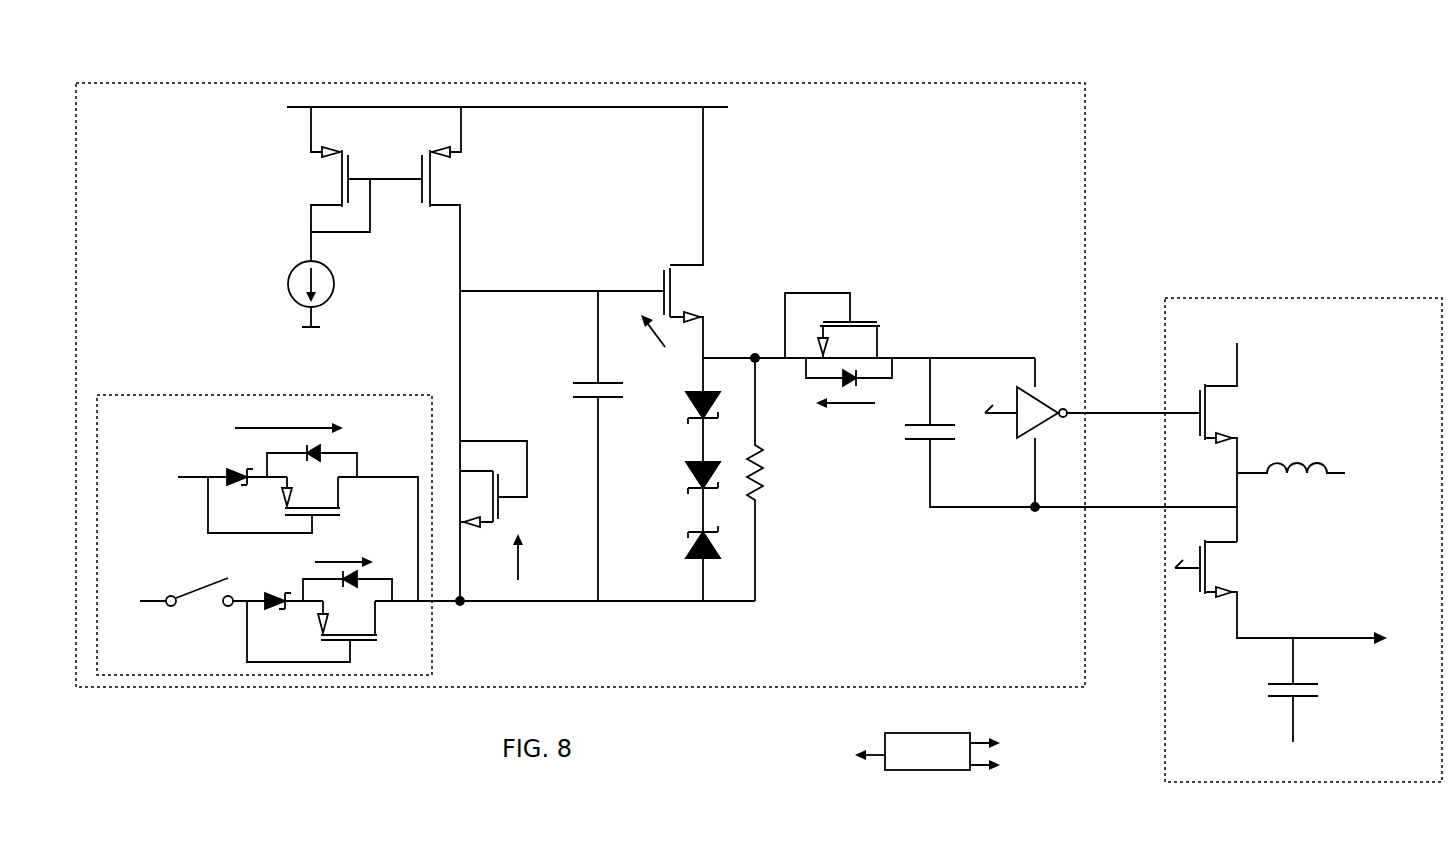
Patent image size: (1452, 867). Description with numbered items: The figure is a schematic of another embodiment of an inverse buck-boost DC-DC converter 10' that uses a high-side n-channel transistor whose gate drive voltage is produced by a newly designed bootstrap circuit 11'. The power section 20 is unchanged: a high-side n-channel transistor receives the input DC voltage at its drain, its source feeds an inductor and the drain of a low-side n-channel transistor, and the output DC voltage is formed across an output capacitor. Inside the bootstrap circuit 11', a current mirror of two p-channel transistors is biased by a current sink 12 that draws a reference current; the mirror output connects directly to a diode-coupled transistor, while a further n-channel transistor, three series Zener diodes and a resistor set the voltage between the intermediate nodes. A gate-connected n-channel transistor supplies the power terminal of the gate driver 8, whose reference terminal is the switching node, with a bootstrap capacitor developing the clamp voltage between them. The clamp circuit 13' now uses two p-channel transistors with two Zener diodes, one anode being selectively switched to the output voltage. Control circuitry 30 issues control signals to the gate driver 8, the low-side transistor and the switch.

The DC-DC converter 10' is at (759, 409).
The bootstrap circuit 11' is at (656, 362).
The current sink 12 is at (292, 261).
The clamp circuit 13' is at (278, 512).
The power section 20 is at (1371, 298).
The control circuitry 30 is at (912, 733).
The gate driver 8 is at (1092, 432).